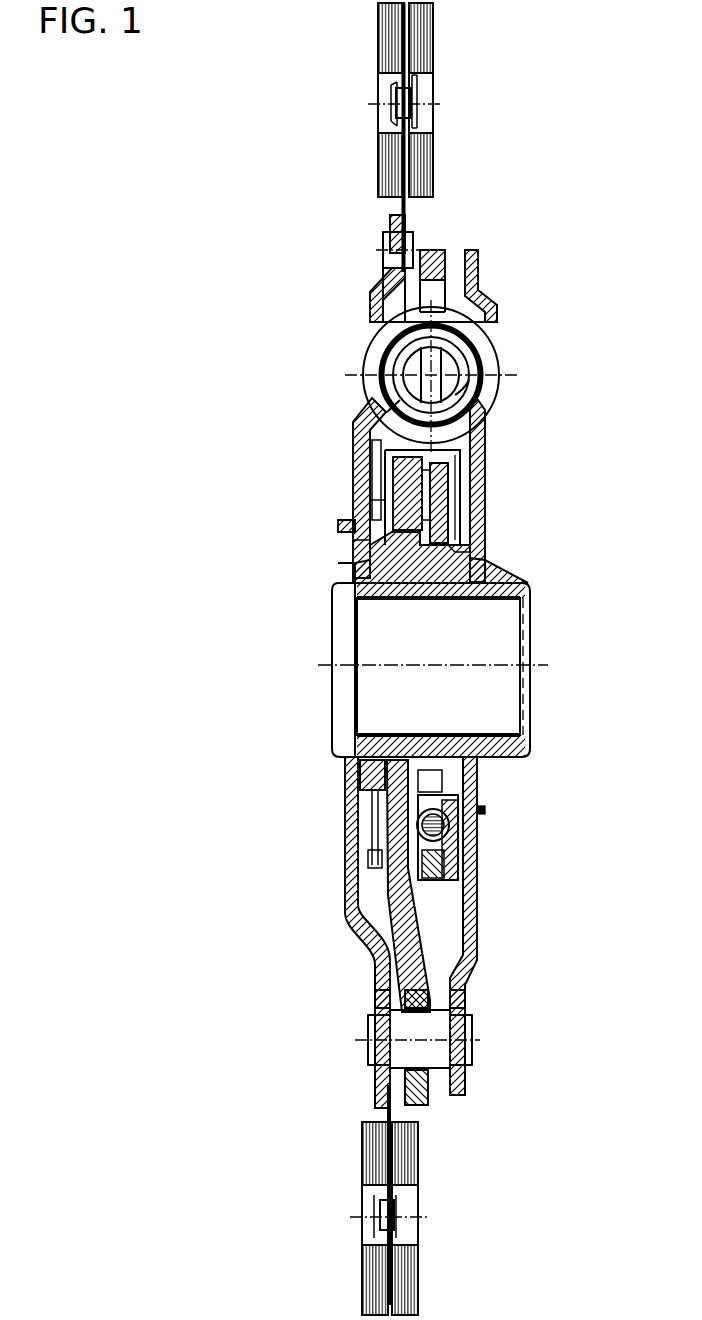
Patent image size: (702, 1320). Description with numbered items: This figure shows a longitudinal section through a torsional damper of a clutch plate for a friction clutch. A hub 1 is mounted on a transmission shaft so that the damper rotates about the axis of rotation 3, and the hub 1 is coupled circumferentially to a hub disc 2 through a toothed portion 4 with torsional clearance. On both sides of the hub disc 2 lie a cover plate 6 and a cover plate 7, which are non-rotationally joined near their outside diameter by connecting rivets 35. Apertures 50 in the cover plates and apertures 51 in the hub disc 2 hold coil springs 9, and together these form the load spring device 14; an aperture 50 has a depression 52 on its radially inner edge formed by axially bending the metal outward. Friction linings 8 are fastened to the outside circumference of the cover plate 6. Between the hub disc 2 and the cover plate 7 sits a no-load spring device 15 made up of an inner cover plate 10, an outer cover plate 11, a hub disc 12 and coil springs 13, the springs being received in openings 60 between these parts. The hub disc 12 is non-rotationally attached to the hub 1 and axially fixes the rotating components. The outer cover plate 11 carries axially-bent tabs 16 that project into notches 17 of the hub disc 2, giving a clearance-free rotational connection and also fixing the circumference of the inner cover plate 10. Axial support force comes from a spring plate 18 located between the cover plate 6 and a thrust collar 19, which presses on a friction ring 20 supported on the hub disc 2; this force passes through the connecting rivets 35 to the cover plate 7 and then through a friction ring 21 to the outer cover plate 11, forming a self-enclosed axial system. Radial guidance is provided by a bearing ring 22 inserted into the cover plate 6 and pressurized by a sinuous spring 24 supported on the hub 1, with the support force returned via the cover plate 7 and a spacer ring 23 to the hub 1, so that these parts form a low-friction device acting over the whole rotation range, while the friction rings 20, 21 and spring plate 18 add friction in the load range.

The friction linings 8 is at (425, 62).
The hub disc 2 is at (445, 268).
The apertures 51 is at (482, 288).
The apertures 50 is at (365, 312).
The coil springs 9 is at (502, 374).
The load spring device 14 is at (345, 354).
The notches 17 is at (357, 430).
The depression 52 is at (500, 400).
The axially-bent tabs 16 is at (485, 437).
The cover plate 6 is at (356, 428).
The cover plate 7 is at (487, 468).
The friction ring 20 is at (356, 473).
The outer cover plate 11 is at (487, 493).
The spring plate 18 is at (356, 500).
The friction ring 21 is at (487, 507).
The thrust collar 19 is at (336, 527).
The spacer ring 23 is at (487, 540).
The bearing ring 22 is at (356, 552).
The sinuous spring 24 is at (345, 572).
The hub 1 is at (400, 568).
The toothed portion 4 is at (410, 605).
The axis of rotation 3 is at (415, 695).
The no-load spring device 15 is at (485, 810).
The coil springs 13 is at (480, 820).
The hub disc 12 is at (435, 878).
The inner cover plate 10 is at (415, 880).
The openings 60 is at (405, 890).
The connecting rivets 35 is at (400, 1050).